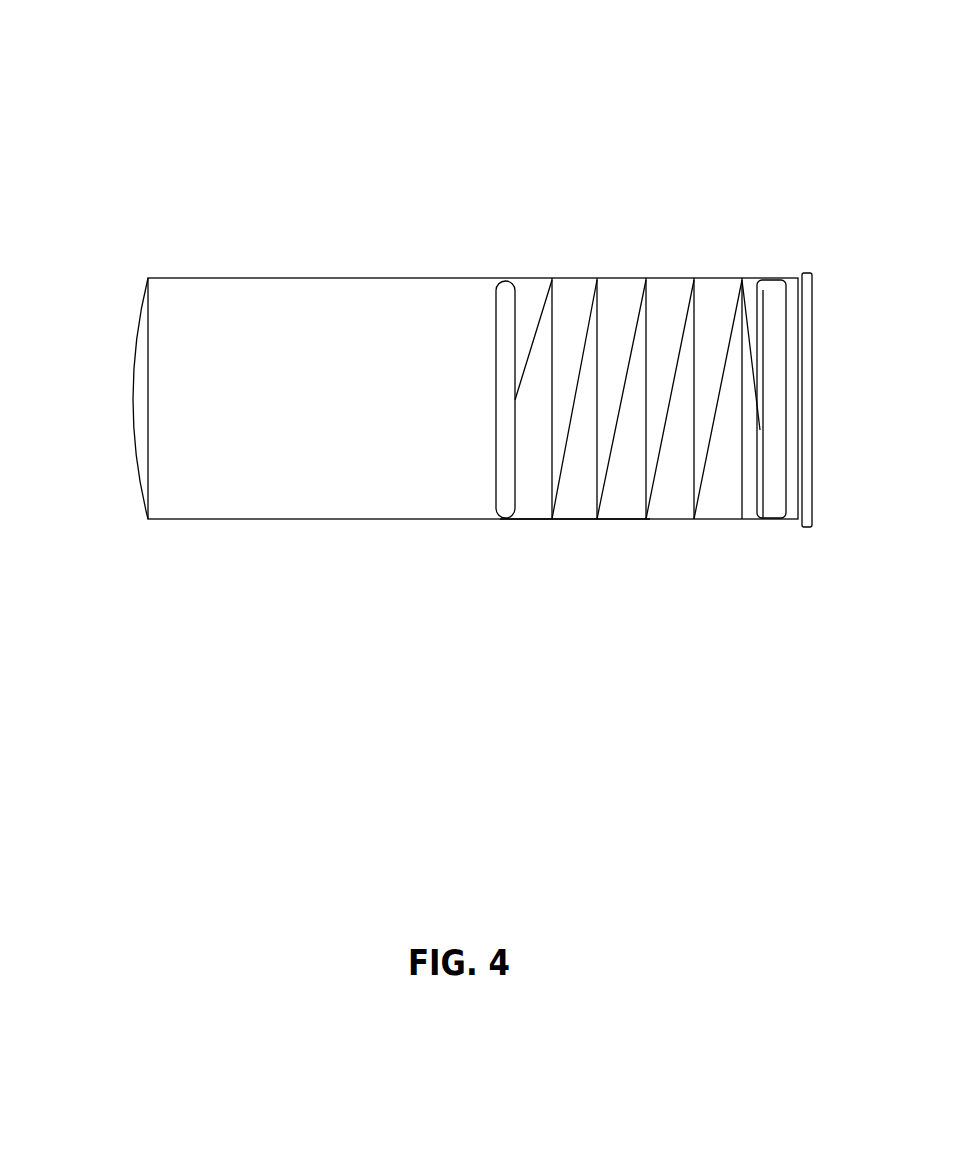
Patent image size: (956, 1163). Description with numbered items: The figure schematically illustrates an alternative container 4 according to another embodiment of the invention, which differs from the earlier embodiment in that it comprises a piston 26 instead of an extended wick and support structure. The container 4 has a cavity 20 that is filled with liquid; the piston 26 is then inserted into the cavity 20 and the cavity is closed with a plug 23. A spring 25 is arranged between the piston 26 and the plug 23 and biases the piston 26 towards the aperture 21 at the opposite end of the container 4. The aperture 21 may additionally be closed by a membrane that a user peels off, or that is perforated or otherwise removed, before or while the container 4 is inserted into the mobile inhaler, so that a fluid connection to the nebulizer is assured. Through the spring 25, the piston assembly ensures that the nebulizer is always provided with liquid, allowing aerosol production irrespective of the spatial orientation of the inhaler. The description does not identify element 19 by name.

The container 4 is at (360, 240).
The cartridge housing 19 is at (575, 520).
The cavity 20 is at (373, 455).
The aperture 21 is at (135, 435).
The plug 23 is at (773, 413).
The spring 25 is at (597, 345).
The piston 26 is at (508, 284).